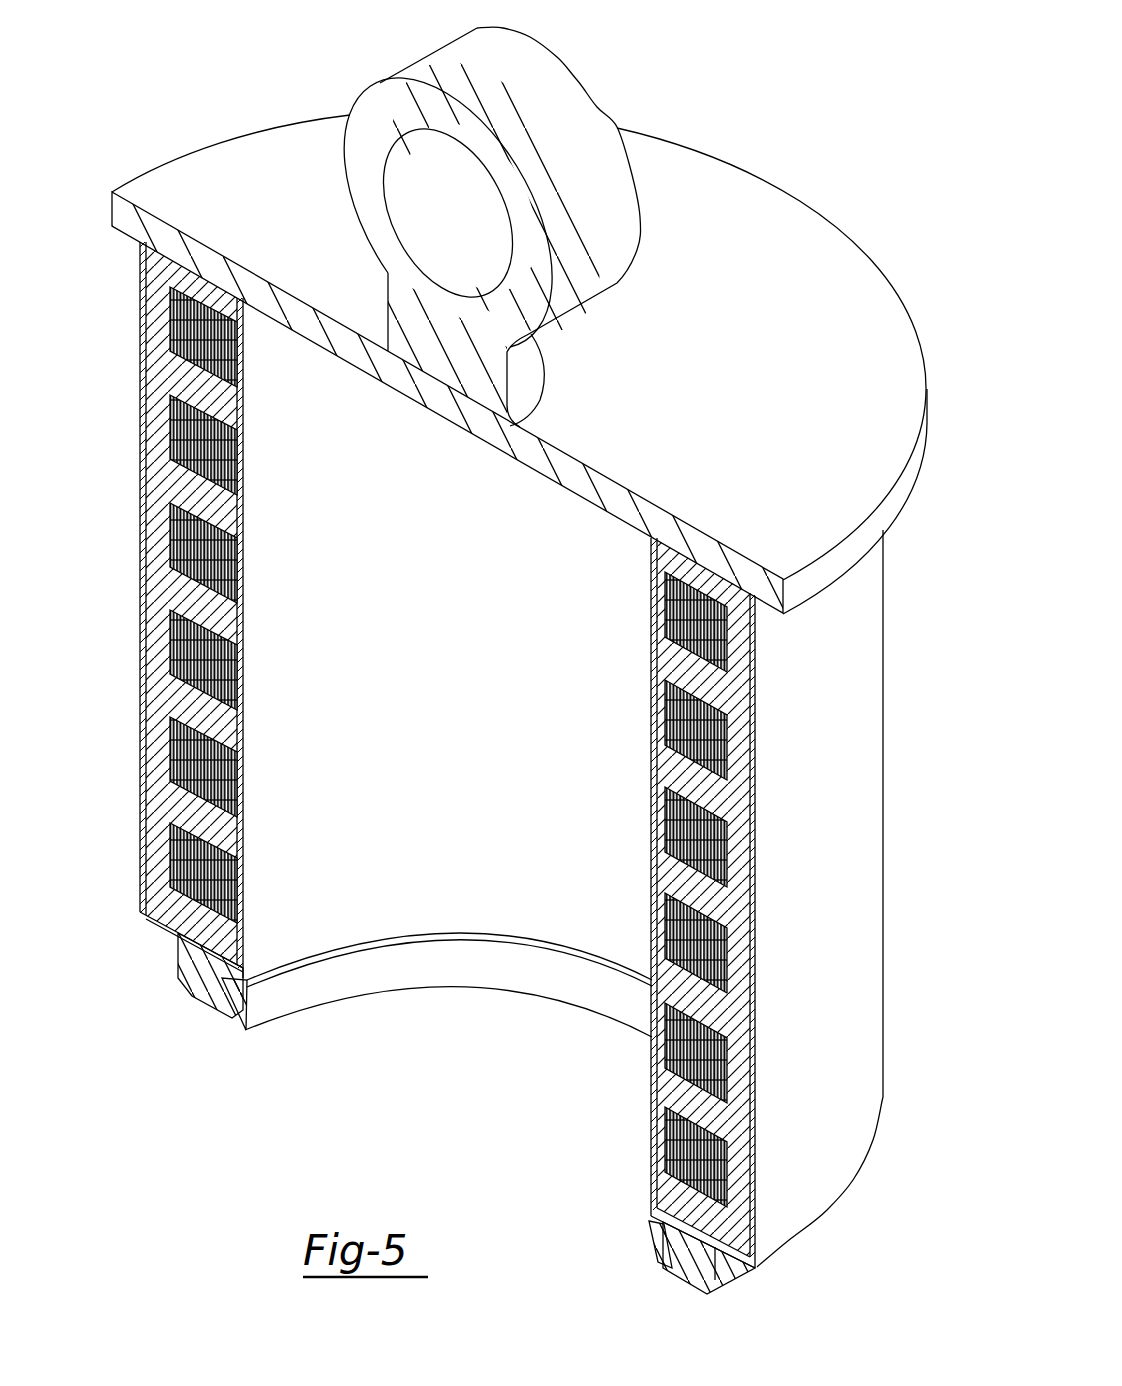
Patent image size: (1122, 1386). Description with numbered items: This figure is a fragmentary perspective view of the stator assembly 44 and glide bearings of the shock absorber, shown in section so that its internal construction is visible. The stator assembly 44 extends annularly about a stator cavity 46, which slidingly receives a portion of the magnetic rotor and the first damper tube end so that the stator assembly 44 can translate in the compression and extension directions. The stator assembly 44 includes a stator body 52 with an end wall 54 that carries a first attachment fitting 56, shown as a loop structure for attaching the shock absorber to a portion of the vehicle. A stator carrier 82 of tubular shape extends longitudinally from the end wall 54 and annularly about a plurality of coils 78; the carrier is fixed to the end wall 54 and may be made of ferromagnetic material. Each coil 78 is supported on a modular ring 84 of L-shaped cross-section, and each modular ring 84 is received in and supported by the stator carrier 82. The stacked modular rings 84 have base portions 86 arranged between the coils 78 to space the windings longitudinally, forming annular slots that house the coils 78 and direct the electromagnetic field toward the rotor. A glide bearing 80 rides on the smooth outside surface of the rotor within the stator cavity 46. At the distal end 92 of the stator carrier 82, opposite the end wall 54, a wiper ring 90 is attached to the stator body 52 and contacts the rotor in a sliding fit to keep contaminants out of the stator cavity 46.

The stator assembly 44 is at (822, 68).
The stator cavity 46 is at (434, 893).
The stator body 52 is at (814, 203).
The end wall 54 is at (727, 212).
The first attachment fitting 56 is at (582, 107).
The coils 78 is at (193, 438).
The glide bearing 80 is at (357, 558).
The stator carrier 82 is at (853, 690).
The modular ring 84 is at (737, 907).
The base portions 86 is at (213, 720).
The wiper ring 90 is at (242, 990).
The distal end 92 is at (147, 923).